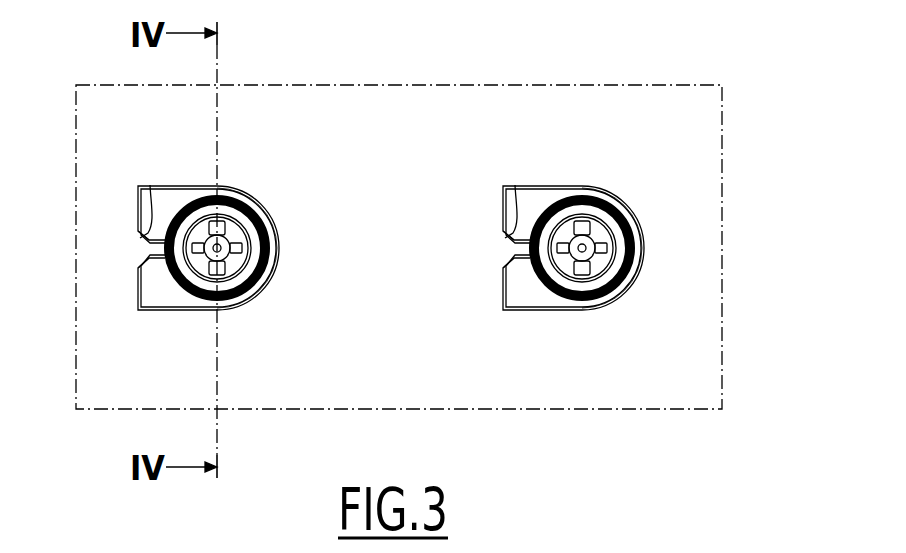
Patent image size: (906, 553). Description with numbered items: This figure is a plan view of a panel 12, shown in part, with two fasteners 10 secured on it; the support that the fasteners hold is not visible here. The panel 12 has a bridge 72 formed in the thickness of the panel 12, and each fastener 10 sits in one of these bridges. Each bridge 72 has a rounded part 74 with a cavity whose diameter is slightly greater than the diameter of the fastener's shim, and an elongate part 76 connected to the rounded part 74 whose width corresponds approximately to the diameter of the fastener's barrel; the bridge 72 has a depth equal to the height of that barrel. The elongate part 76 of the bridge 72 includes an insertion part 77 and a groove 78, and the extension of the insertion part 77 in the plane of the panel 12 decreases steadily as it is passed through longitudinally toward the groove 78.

The panel 12 is at (707, 207).
The bridge 72 is at (253, 172).
The fastener 10 is at (249, 221).
The rounded part 74 is at (258, 298).
The groove 78 is at (150, 185).
The insertion part 77 is at (136, 238).
The elongate part 76 is at (148, 247).